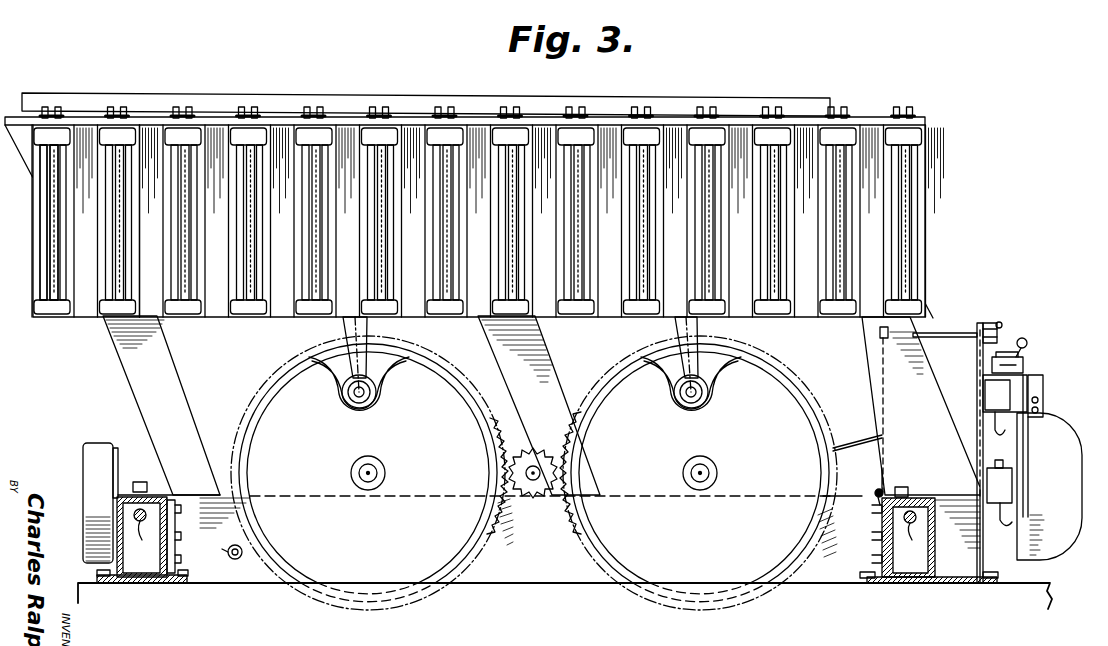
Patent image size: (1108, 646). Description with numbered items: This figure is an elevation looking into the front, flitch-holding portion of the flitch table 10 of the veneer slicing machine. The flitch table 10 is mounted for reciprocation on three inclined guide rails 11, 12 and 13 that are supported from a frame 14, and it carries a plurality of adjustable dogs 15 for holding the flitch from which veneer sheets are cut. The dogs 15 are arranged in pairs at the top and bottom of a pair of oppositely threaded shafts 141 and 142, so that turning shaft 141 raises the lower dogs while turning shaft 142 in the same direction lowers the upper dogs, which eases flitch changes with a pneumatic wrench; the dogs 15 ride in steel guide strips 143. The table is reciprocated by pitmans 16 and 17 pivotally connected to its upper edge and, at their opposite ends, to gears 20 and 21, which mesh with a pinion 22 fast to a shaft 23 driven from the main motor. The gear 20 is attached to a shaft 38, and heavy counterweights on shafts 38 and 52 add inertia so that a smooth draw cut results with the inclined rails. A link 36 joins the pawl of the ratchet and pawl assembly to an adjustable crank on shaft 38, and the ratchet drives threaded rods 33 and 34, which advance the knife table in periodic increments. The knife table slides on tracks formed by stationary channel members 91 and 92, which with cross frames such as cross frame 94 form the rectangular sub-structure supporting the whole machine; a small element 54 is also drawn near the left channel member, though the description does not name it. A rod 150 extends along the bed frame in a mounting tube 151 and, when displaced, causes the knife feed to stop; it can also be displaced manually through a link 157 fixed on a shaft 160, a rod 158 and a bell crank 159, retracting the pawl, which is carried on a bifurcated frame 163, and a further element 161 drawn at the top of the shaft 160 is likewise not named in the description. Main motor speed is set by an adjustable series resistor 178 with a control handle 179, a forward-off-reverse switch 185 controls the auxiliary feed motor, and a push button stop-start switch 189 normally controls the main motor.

The flitch table 10 is at (873, 123).
The guide rail 11 is at (922, 356).
The guide rail 12 is at (557, 365).
The guide rail 13 is at (176, 386).
The frame 14 is at (617, 97).
The adjustable dogs 15 is at (223, 139).
The pitman 16 is at (678, 331).
The pitman 17 is at (343, 331).
The gear 20 is at (698, 463).
The gear 21 is at (389, 463).
The pinion 22 is at (525, 504).
The shaft 23 is at (533, 468).
The threaded rod 33 is at (926, 532).
The threaded rod 34 is at (166, 510).
The link 36 is at (846, 445).
The shaft 38 is at (702, 474).
The shaft 52 is at (370, 474).
The roller 54 is at (228, 552).
The channel member 91 is at (937, 564).
The channel member 92 is at (157, 584).
The cross frame 94 is at (551, 573).
The threaded shaft 141 is at (43, 214).
The threaded shaft 142 is at (58, 222).
The steel guide strips 143 is at (135, 243).
The rod 150 is at (877, 493).
The mounting tube 151 is at (878, 498).
The link 157 is at (880, 333).
The rod 158 is at (882, 389).
The bell crank 159 is at (882, 478).
The shaft 160 is at (946, 334).
The clamp 161 is at (995, 325).
The bifurcated frame 163 is at (1046, 402).
The adjustable series resistor 178 is at (1032, 458).
The control handle 179 is at (1028, 346).
The forward-off-reverse switch 185 is at (1010, 395).
The push button stop-start switch 189 is at (1003, 330).